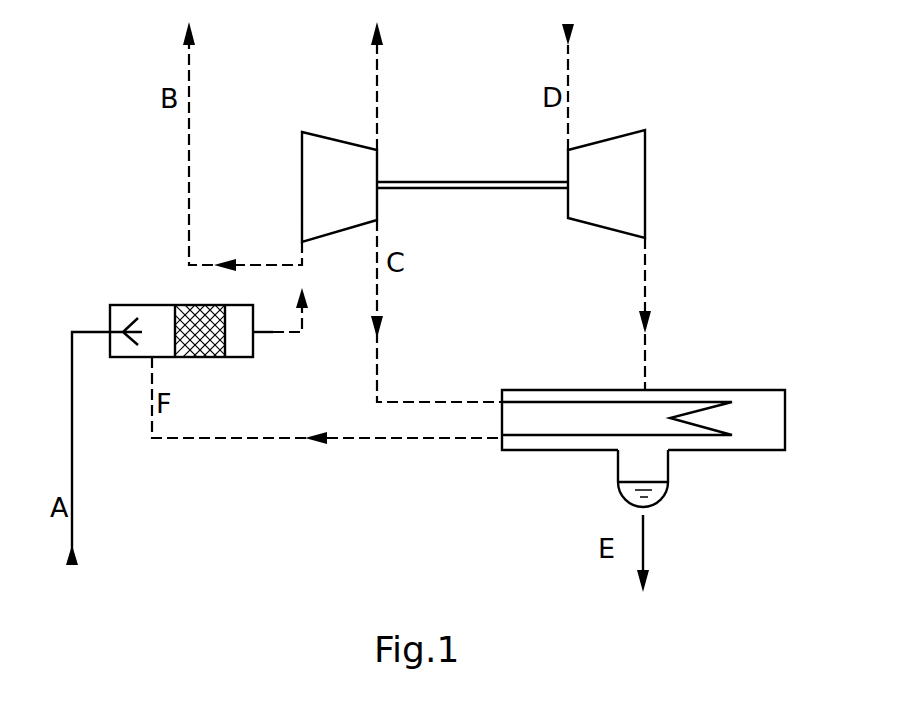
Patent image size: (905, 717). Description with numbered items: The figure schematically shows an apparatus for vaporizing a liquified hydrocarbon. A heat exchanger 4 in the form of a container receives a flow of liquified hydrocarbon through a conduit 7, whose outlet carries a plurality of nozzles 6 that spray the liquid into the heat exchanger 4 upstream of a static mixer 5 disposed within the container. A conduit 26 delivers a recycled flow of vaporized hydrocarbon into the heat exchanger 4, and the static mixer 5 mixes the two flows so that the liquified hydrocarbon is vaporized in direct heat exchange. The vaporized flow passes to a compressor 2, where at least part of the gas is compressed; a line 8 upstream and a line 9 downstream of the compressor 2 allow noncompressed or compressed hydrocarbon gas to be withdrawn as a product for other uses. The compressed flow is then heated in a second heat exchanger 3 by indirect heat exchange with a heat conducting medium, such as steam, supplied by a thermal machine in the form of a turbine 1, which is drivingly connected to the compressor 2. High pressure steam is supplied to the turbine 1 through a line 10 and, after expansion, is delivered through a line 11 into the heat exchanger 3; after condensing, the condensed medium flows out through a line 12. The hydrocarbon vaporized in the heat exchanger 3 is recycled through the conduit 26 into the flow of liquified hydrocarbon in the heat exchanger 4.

The turbine 1 is at (645, 180).
The compressor 2 is at (302, 167).
The heat exchanger 3 is at (720, 390).
The heat exchanger 4 is at (130, 357).
The static mixer 5 is at (213, 357).
The nozzles 6 is at (125, 330).
The conduit 7 is at (72, 502).
The line 8 is at (189, 113).
The line 9 is at (377, 118).
The line 10 is at (568, 83).
The line 11 is at (645, 293).
The line 12 is at (643, 547).
The conduit 26 is at (363, 438).